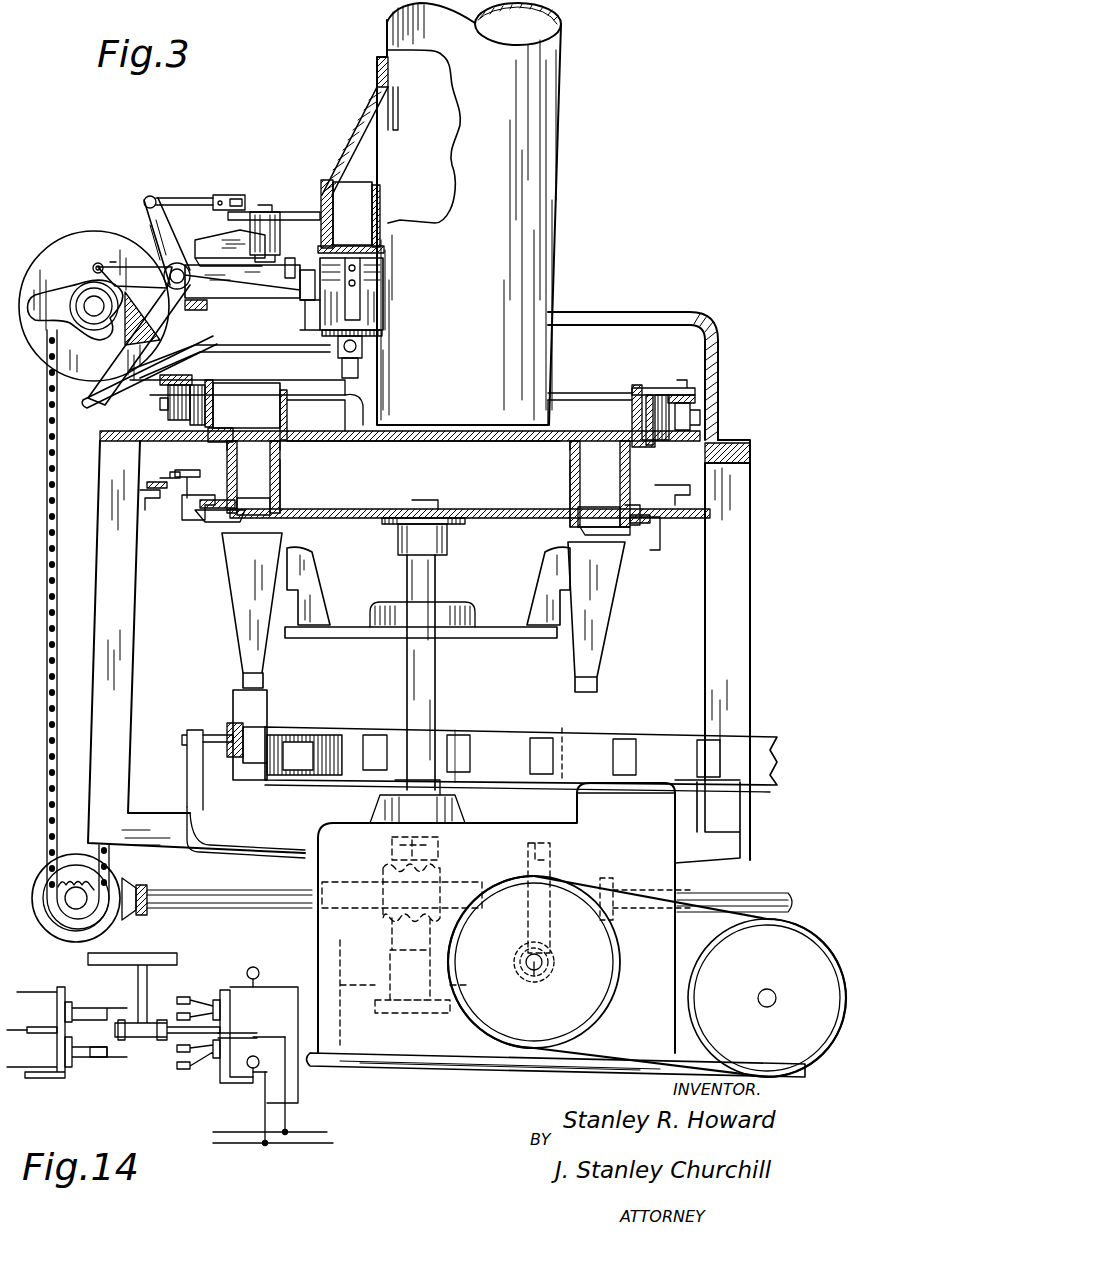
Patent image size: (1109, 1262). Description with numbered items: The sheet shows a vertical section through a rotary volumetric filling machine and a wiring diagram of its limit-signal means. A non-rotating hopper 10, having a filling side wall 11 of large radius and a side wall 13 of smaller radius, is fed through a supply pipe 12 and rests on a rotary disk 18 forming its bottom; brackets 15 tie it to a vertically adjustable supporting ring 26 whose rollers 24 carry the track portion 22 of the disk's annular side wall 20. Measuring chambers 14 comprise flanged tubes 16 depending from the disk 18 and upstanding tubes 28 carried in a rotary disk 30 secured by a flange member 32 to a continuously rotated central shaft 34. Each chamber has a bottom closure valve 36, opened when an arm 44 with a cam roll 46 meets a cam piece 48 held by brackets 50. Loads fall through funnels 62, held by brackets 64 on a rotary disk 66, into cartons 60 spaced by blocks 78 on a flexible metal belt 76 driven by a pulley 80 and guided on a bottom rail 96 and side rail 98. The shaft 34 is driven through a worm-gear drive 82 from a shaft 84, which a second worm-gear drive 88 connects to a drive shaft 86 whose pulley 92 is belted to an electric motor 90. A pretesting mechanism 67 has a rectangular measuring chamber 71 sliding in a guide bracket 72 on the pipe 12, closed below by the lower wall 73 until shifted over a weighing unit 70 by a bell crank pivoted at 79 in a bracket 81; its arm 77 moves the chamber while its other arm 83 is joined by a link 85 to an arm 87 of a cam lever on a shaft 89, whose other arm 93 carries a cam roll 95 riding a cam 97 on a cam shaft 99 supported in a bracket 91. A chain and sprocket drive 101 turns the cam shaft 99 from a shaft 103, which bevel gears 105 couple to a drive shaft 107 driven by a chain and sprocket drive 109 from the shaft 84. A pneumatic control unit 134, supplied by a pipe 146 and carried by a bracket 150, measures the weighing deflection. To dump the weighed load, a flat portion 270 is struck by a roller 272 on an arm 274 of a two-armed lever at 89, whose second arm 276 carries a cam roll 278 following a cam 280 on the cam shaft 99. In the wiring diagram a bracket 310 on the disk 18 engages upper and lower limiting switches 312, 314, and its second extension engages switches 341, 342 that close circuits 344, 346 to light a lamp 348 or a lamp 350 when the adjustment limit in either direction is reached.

In FIG. 3, the hopper 10 is at (587, 378).
In FIG. 3, the side wall 11 is at (625, 403).
In FIG. 3, the supply pipe 12 is at (562, 140).
In FIG. 3, the side wall 13 is at (288, 415).
In FIG. 3, the measuring chambers 14 is at (593, 480).
In FIG. 3, the brackets 15 is at (660, 388).
In FIG. 3, the flanged tubes 16 is at (282, 456).
In FIG. 3, the rotary disk 18 is at (380, 442).
In FIG. 3, the annular side wall 20 is at (214, 404).
In FIG. 3, the track portion 22 is at (208, 388).
In FIG. 3, the rollers 24 is at (198, 420).
In FIG. 3, the supporting ring 26 is at (178, 380).
In FIG. 3, the upstanding tubes 28 is at (282, 485).
In FIG. 3, the rotary disk 30 is at (483, 520).
In FIG. 3, the flange member 32 is at (398, 542).
In FIG. 3, the central shaft 34 is at (437, 583).
In FIG. 3, the bottom closure valve 36 is at (230, 520).
In FIG. 3, the arm 44 is at (178, 490).
In FIG. 3, the cam roll 46 is at (182, 512).
In FIG. 3, the cam piece 48 is at (160, 478).
In FIG. 3, the brackets 50 is at (140, 497).
In FIG. 3, the cartons 60 is at (270, 700).
In FIG. 3, the funnels 62 is at (240, 630).
In FIG. 3, the brackets 64 is at (310, 597).
In FIG. 3, the rotary disk 66 is at (470, 636).
In FIG. 3, the pretesting mechanism 67 is at (280, 158).
In FIG. 3, the weighing unit 70 is at (298, 324).
In FIG. 3, the rectangular measuring chamber 71 is at (345, 192).
In FIG. 3, the guide bracket 72 is at (368, 118).
In FIG. 3, the lower wall 73 is at (368, 240).
In FIG. 3, the flexible metal belt 76 is at (580, 733).
In FIG. 3, the arm 77 is at (312, 215).
In FIG. 3, the blocks 78 is at (630, 740).
In FIG. 3, the pivot 79 is at (265, 208).
In FIG. 3, the driving pulley 80 is at (485, 730).
In FIG. 3, the bracket 81 is at (225, 238).
In FIG. 3, the worm-gear drive 82 is at (462, 862).
In FIG. 3, the arm 83 is at (240, 195).
In FIG. 3, the shaft 84 is at (520, 905).
In FIG. 3, the link 85 is at (185, 200).
In FIG. 3, the drive shaft 86 is at (532, 970).
In FIG. 3, the arm 87 is at (163, 220).
In FIG. 3, the second worm-gear drive 88 is at (563, 950).
In FIG. 3, the shaft 89 is at (180, 292).
In FIG. 3, the electric motor 90 is at (735, 948).
In FIG. 3, the bracket 91 is at (85, 290).
In FIG. 3, the pulley 92 is at (595, 992).
In FIG. 3, the arm 93 is at (145, 290).
In FIG. 3, the cam roll 95 is at (118, 265).
In FIG. 3, the bottom supporting rail 96 is at (244, 794).
In FIG. 3, the cam 97 is at (88, 292).
In FIG. 3, the side rail 98 is at (228, 725).
In FIG. 3, the cam shaft 99 is at (72, 270).
In FIG. 3, the chain and sprocket drive 101 is at (47, 720).
In FIG. 3, the shaft 103 is at (77, 890).
In FIG. 3, the bevel gears 105 is at (133, 928).
In FIG. 3, the drive shaft 107 is at (218, 912).
In FIG. 3, the chain and sprocket drive 109 is at (616, 876).
In FIG. 3, the pneumatically operated control means 134 is at (332, 364).
In FIG. 3, the pipe 146 is at (250, 352).
In FIG. 3, the bracket 150 is at (298, 402).
In FIG. 3, the flat portion 270 is at (295, 280).
In FIG. 3, the roller 272 is at (290, 265).
In FIG. 3, the arm 274 is at (215, 280).
In FIG. 3, the second arm 276 is at (118, 262).
In FIG. 3, the cam roll 278 is at (95, 262).
In FIG. 3, the cam 280 is at (68, 283).
In FIG. 14, the bracket 310 is at (140, 995).
In FIG. 14, the upper limiting switch 312 is at (85, 990).
In FIG. 14, the lower limiting switch 314 is at (98, 1075).
In FIG. 14, the upper switch 341 is at (196, 986).
In FIG. 14, the lower switch 342 is at (177, 1075).
In FIG. 14, the circuit 344 is at (265, 987).
In FIG. 14, the circuit 346 is at (265, 1095).
In FIG. 14, the lamp 348 is at (258, 968).
In FIG. 14, the lamp 350 is at (258, 1056).